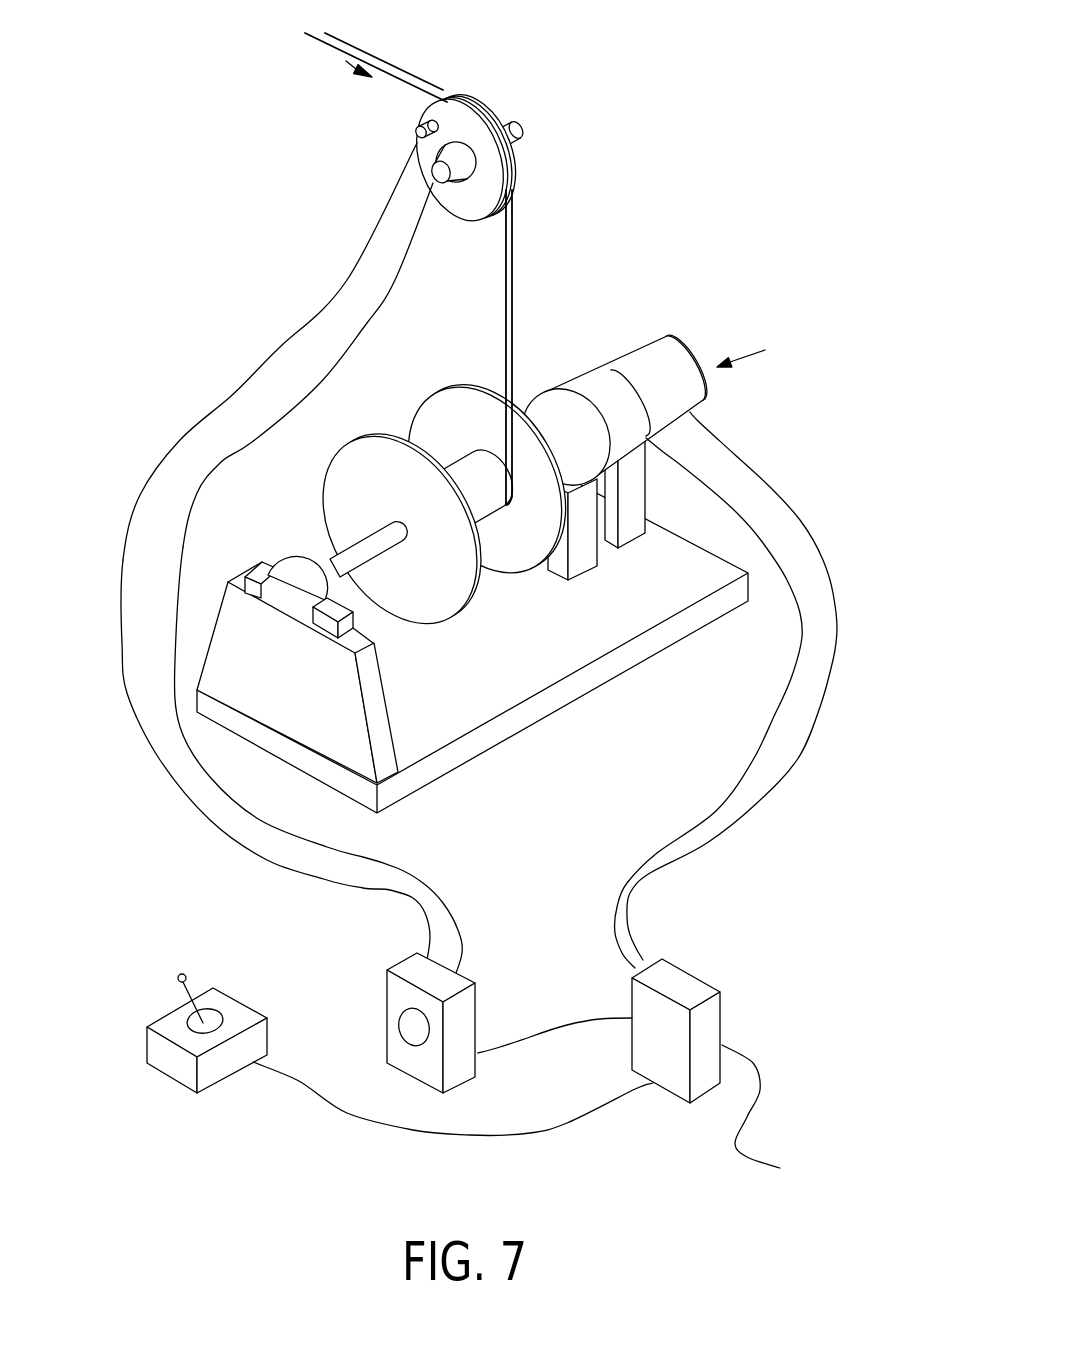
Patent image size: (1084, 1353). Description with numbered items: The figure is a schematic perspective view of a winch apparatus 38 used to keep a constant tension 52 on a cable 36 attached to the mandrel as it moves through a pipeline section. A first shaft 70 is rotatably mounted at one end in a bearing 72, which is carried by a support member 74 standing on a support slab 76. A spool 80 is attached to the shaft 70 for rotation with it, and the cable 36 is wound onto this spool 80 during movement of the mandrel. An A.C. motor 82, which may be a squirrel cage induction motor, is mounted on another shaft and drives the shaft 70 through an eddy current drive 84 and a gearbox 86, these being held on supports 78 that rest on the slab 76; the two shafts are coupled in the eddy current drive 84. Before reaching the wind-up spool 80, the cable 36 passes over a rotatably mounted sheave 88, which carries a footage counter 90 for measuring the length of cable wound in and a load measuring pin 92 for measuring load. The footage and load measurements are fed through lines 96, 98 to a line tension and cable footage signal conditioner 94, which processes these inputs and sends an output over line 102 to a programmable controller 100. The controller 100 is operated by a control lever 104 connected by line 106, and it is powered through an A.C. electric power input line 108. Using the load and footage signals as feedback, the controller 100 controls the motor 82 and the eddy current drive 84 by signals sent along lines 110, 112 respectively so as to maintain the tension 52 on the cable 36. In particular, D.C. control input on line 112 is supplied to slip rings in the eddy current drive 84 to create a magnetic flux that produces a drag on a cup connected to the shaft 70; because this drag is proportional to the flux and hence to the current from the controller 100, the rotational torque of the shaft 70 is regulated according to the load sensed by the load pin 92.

The cable 36 is at (352, 42).
The winch apparatus 38 is at (757, 348).
The tension 52 is at (327, 47).
The first shaft 70 is at (328, 560).
The bearing 72 is at (288, 595).
The support member 74 is at (357, 717).
The support slab 76 is at (601, 668).
The supports 78 is at (578, 563).
The spool 80 is at (353, 452).
The A.C. motor 82 is at (670, 390).
The eddy current drive 84 is at (592, 387).
The gearbox 86 is at (528, 408).
The sheave 88 is at (482, 103).
The footage counter 90 is at (418, 127).
The load measuring pin 92 is at (457, 167).
The line tension and cable footage signal conditioner 94 is at (467, 1017).
The line 96 is at (115, 643).
The line 98 is at (252, 442).
The programmable controller 100 is at (712, 1022).
The line 102 is at (560, 1028).
The control lever 104 is at (235, 1008).
The line 106 is at (467, 1137).
The A.C. electric power input line 108 is at (773, 1168).
The line 110 is at (837, 634).
The line 112 is at (757, 751).